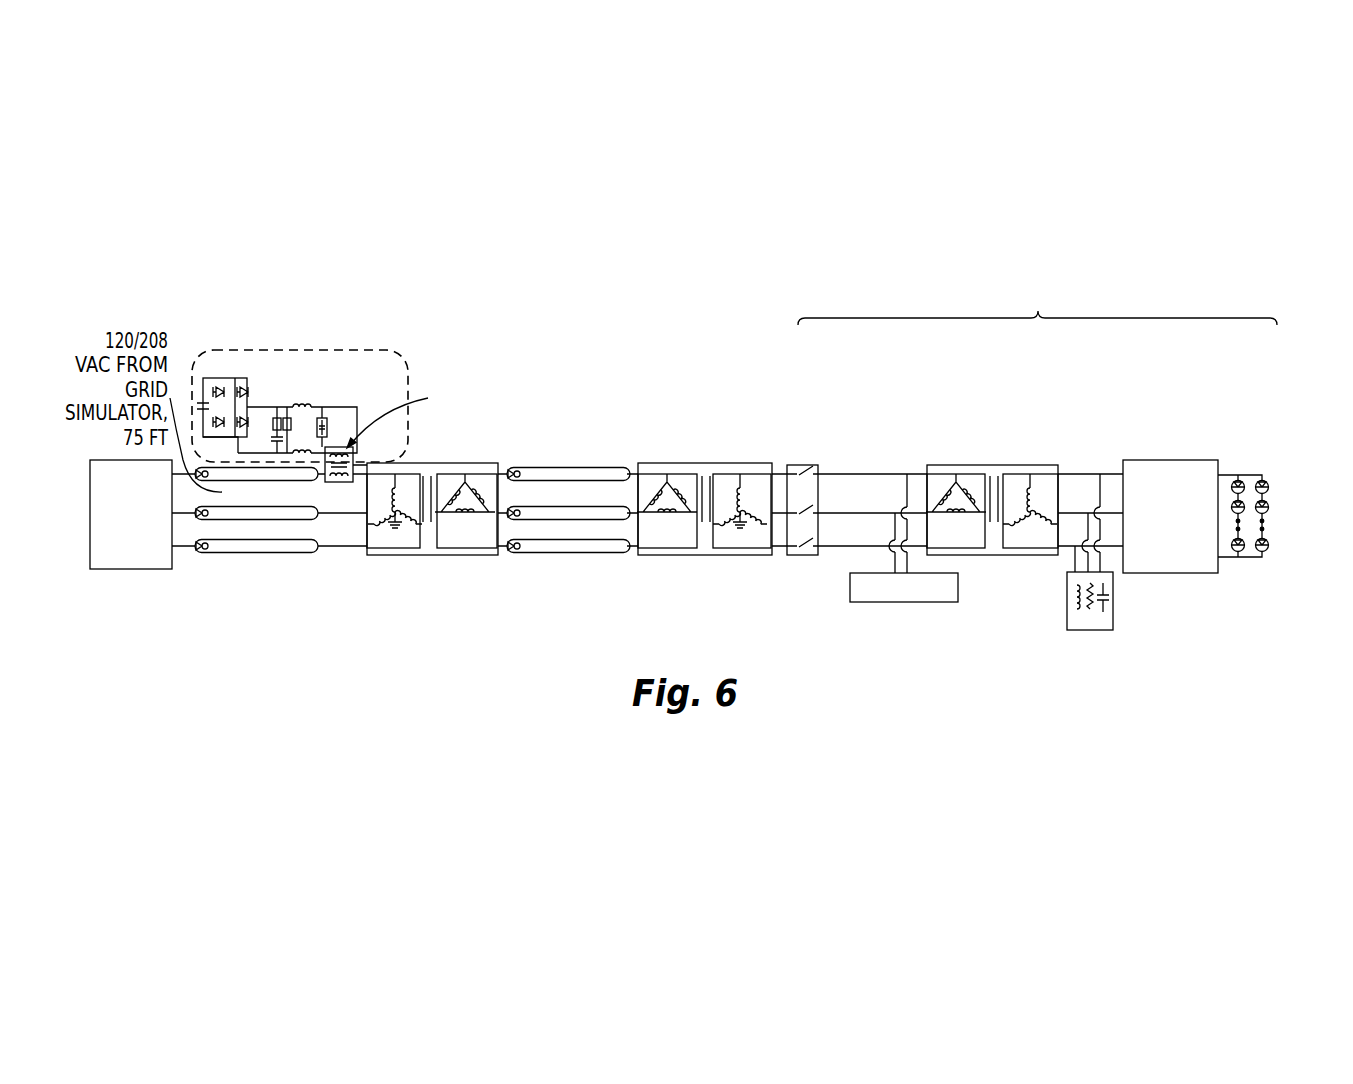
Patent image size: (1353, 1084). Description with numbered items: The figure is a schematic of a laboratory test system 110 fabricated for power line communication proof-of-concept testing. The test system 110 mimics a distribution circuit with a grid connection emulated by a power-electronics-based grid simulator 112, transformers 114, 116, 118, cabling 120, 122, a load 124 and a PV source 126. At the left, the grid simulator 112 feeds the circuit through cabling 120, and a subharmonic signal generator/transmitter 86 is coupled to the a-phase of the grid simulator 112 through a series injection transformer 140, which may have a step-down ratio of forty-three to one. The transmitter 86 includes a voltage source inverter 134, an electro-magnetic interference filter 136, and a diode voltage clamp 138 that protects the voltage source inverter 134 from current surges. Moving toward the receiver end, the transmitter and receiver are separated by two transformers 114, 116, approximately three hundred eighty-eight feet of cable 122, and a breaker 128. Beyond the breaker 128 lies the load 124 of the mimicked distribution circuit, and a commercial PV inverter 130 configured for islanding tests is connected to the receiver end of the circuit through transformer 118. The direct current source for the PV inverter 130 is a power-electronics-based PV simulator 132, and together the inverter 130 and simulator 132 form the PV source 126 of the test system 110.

The subharmonic signal generator/transmitter 86 is at (262, 348).
The test system 110 is at (645, 357).
The grid simulator 112 is at (143, 571).
The transformer 114 is at (498, 582).
The transformer 116 is at (772, 582).
The transformer 118 is at (1063, 457).
The cabling 120 is at (318, 570).
The cable 122 is at (627, 565).
The load 124 is at (885, 478).
The PV source 126 is at (1230, 515).
The breaker 128 is at (785, 463).
The PV inverter 130 is at (1157, 552).
The PV simulator 132 is at (1270, 488).
The voltage source inverter 134 is at (227, 355).
The EMI filter 136 is at (300, 358).
The diode voltage clamp 138 is at (364, 370).
The series injection transformer 140 is at (357, 461).